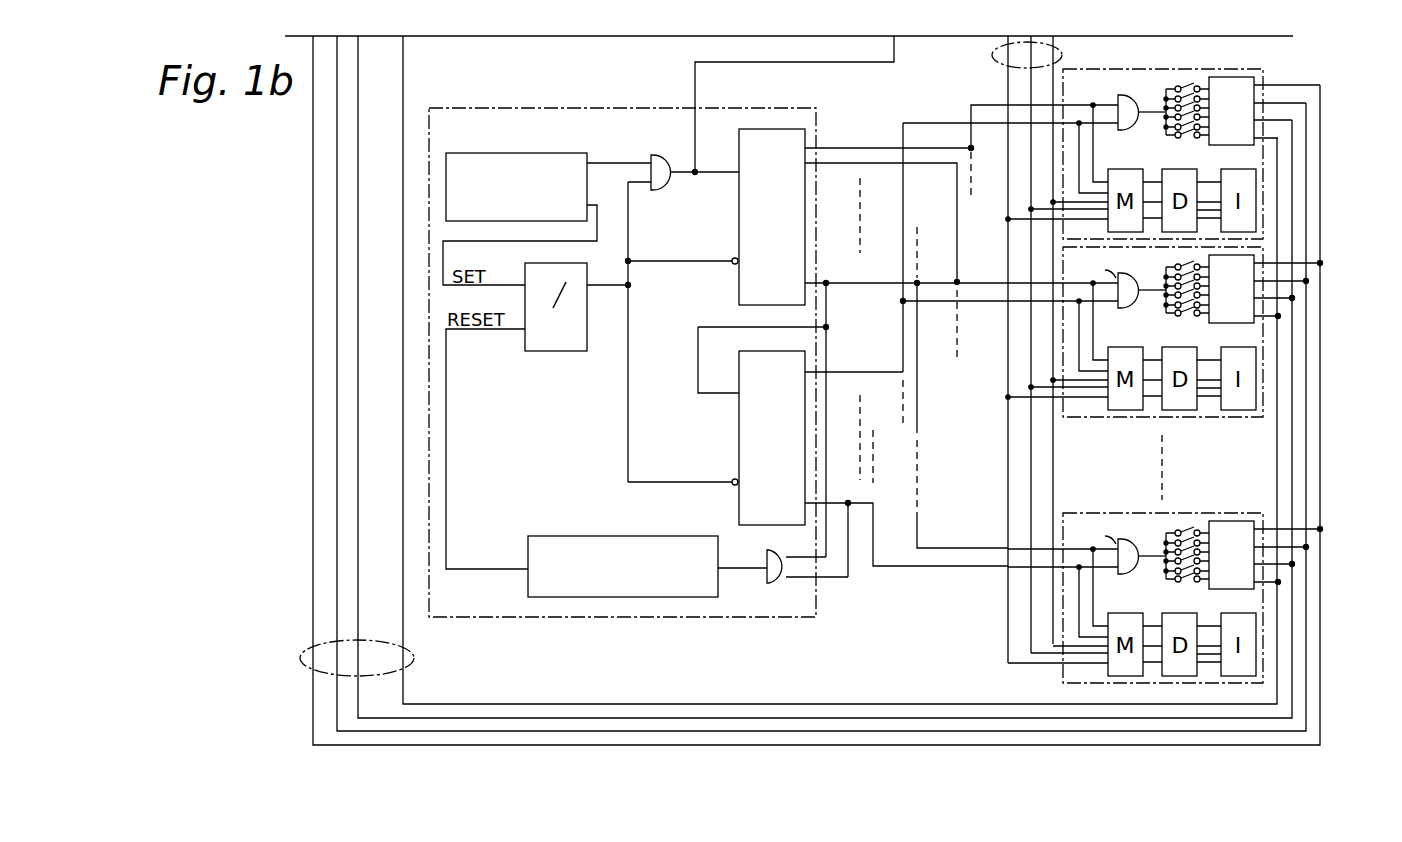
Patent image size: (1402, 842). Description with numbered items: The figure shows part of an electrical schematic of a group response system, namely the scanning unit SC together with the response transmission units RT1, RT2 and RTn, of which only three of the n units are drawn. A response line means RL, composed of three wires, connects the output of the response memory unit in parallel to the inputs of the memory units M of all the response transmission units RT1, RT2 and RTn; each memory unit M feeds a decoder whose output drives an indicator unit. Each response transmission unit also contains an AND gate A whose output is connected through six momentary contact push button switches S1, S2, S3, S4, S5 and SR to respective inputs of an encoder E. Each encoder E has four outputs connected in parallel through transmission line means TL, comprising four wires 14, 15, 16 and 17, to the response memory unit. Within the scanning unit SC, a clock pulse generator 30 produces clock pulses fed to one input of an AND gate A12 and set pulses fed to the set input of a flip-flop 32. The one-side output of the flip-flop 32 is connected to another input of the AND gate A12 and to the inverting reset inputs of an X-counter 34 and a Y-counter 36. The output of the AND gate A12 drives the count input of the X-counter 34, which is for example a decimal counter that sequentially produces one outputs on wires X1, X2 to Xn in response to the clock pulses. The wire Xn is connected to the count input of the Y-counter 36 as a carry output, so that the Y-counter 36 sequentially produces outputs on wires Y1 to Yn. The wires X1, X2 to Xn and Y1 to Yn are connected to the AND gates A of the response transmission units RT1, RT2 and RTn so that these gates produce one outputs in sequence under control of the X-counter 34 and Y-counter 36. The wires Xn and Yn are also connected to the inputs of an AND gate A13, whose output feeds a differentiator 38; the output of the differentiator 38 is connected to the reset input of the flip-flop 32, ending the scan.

The wire 14 is at (313, 542).
The wire 15 is at (337, 574).
The wire 16 is at (358, 606).
The wire 17 is at (403, 698).
The clock pulse generator 30 is at (522, 153).
The flip-flop 32 is at (549, 353).
The X-counter 34 is at (780, 128).
The Y-counter 36 is at (739, 425).
The differentiator 38 is at (622, 536).
The AND gate A12 is at (660, 158).
The AND gate A13 is at (766, 560).
The wire X1 is at (844, 156).
The wire X2 is at (850, 170).
The wire Xn is at (844, 281).
The wire Y1 is at (848, 376).
The wire Yn is at (844, 507).
The response line means RL is at (1000, 62).
The transmission line means TL is at (415, 652).
The scanning unit SC is at (652, 618).
The response transmission unit RT1 is at (1186, 140).
The response transmission unit RT2 is at (1265, 338).
The response transmission unit RTn is at (1268, 618).
The AND gate A is at (1116, 100).
The switch S1 is at (1190, 84).
The switch S2 is at (1166, 88).
The switch S3 is at (1164, 100).
The switch S4 is at (1172, 130).
The switch S5 is at (1166, 140).
The switch SR is at (1192, 142).
The encoder E is at (1264, 111).
The memory unit M is at (1265, 165).